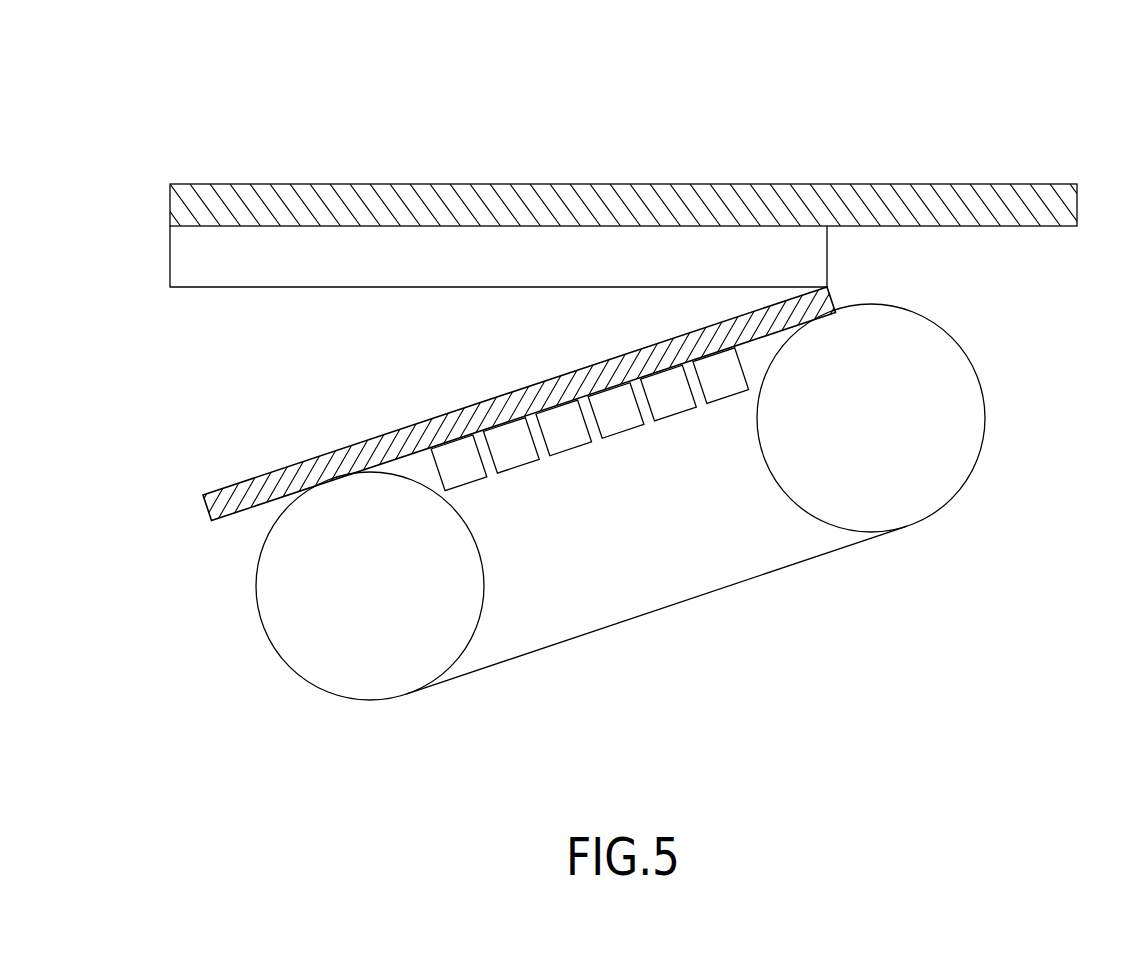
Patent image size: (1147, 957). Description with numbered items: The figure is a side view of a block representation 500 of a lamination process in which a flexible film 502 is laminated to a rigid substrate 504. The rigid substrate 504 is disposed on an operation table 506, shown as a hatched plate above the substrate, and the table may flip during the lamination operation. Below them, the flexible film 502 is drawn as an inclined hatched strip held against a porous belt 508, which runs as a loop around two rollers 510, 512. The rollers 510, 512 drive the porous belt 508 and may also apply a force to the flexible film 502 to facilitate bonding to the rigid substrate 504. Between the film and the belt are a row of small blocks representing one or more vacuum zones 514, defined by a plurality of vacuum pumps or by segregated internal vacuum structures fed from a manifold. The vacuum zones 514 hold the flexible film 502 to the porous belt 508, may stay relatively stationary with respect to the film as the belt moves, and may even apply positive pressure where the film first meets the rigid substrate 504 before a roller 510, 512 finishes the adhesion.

The block representation 500 is at (1033, 92).
The flexible film 502 is at (410, 425).
The rigid substrate 504 is at (828, 254).
The operation table 506 is at (606, 184).
The porous belt 508 is at (772, 334).
The roller 510 is at (482, 600).
The roller 512 is at (985, 433).
The vacuum zones 514 is at (520, 471).